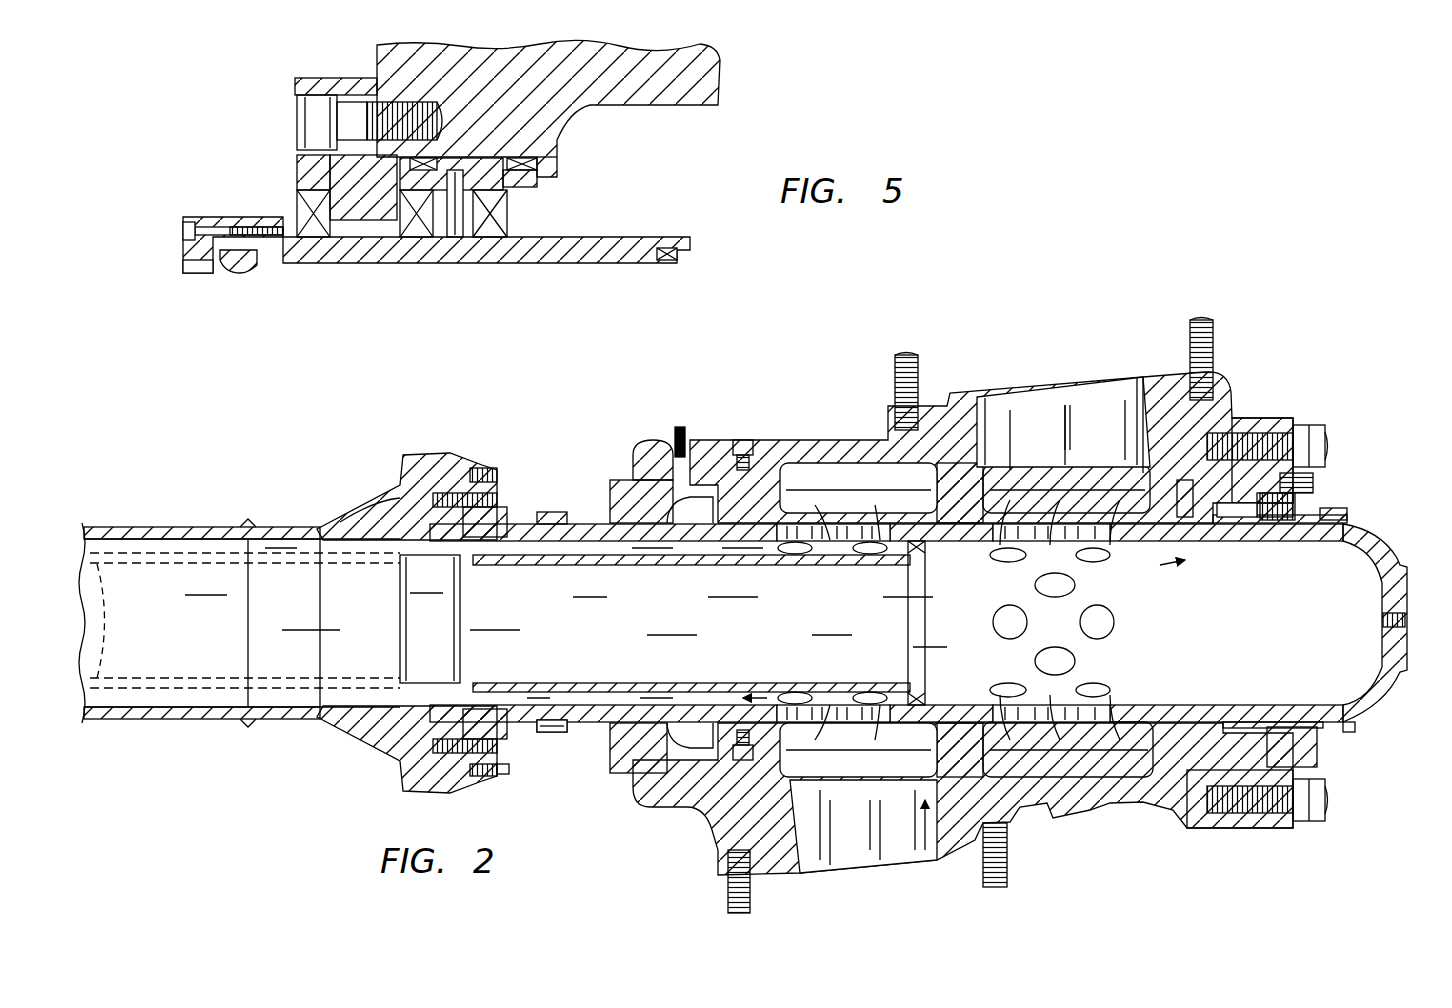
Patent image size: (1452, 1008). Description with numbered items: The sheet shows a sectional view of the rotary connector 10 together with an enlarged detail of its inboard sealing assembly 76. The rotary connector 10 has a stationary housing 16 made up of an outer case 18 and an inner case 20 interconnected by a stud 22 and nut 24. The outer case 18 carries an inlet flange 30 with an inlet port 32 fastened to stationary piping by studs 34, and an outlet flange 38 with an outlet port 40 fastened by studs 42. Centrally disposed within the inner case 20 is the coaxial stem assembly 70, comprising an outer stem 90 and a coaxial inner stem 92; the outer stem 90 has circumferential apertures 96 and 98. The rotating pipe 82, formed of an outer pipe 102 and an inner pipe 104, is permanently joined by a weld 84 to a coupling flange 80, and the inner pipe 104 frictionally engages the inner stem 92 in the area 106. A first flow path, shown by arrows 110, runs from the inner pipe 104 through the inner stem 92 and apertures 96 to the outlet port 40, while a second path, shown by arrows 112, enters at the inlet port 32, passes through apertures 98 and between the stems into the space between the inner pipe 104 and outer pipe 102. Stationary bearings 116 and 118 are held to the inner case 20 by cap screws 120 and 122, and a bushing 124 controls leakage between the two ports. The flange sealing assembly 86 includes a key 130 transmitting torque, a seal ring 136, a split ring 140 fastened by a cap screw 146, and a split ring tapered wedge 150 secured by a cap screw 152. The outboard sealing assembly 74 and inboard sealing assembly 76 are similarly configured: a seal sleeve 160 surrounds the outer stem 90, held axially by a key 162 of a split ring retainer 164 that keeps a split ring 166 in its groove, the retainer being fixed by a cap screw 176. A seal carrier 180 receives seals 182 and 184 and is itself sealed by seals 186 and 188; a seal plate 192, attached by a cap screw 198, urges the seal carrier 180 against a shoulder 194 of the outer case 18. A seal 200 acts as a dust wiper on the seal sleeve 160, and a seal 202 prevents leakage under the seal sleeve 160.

In FIG. 2, the rotary connector 10 is at (805, 393).
In FIG. 2, the housing 16 is at (697, 830).
In FIG. 5, the outer case 18 is at (690, 82).
In FIG. 2, the outer case 18 is at (832, 440).
In FIG. 2, the inner case 20 is at (770, 465).
In FIG. 2, the stud 22 is at (1255, 433).
In FIG. 2, the nut 24 is at (1327, 435).
In FIG. 2, the inlet flange 30 is at (945, 862).
In FIG. 2, the inlet port 32 is at (800, 873).
In FIG. 2, the studs 34 is at (728, 900).
In FIG. 2, the outlet flange 38 is at (1148, 377).
In FIG. 2, the outlet port 40 is at (978, 397).
In FIG. 2, the studs 42 is at (918, 360).
In FIG. 2, the coaxial stem assembly 70 is at (1393, 540).
In FIG. 2, the outboard sealing assembly 74 is at (1353, 505).
In FIG. 5, the inboard sealing assembly 76 is at (598, 187).
In FIG. 2, the inboard sealing assembly 76 is at (605, 480).
In FIG. 2, the coupling flange 80 is at (407, 455).
In FIG. 2, the rotating pipe 82 is at (170, 513).
In FIG. 2, the weld 84 is at (247, 519).
In FIG. 2, the flange sealing assembly 86 is at (522, 468).
In FIG. 2, the outer stem 90 is at (690, 540).
In FIG. 2, the inner stem 92 is at (660, 565).
In FIG. 2, the apertures 96 is at (1090, 525).
In FIG. 2, the apertures 98 is at (810, 683).
In FIG. 2, the outer pipe 102 is at (140, 720).
In FIG. 2, the inner pipe 104 is at (200, 702).
In FIG. 2, the area of frictional engagement 106 is at (430, 680).
In FIG. 2, the arrows 110 is at (335, 630).
In FIG. 2, the arrows 112 is at (265, 547).
In FIG. 2, the stationary bearing 116 is at (1210, 523).
In FIG. 2, the stationary bearing 118 is at (690, 480).
In FIG. 2, the cap screw 120 is at (1183, 523).
In FIG. 2, the cap screw 122 is at (742, 470).
In FIG. 2, the bushing 124 is at (942, 623).
In FIG. 2, the key 130 is at (397, 500).
In FIG. 2, the seal ring 136 is at (398, 500).
In FIG. 2, the split ring 140 is at (500, 478).
In FIG. 2, the cap screw 146 is at (447, 492).
In FIG. 2, the split ring tapered wedge 150 is at (484, 468).
In FIG. 2, the cap screw 152 is at (510, 768).
In FIG. 5, the seal sleeve 160 is at (495, 250).
In FIG. 2, the seal sleeve 160 is at (575, 512).
In FIG. 5, the key 162 is at (200, 275).
In FIG. 5, the split ring retainer 164 is at (185, 250).
In FIG. 2, the split ring retainer 164 is at (562, 733).
In FIG. 5, the split ring 166 is at (238, 272).
In FIG. 2, the split ring 166 is at (1330, 523).
In FIG. 5, the cap screw 176 is at (220, 217).
In FIG. 2, the cap screw 176 is at (1347, 512).
In FIG. 5, the seal carrier 180 is at (522, 187).
In FIG. 5, the seal 182 is at (505, 216).
In FIG. 5, the seal 184 is at (420, 210).
In FIG. 5, the seal 186 is at (445, 158).
In FIG. 5, the seal 188 is at (515, 158).
In FIG. 5, the seal plate 192 is at (340, 78).
In FIG. 2, the seal plate 192 is at (625, 480).
In FIG. 5, the shoulder 194 is at (557, 162).
In FIG. 5, the cap screw 198 is at (300, 118).
In FIG. 2, the cap screw 198 is at (1315, 485).
In FIG. 5, the seal 200 is at (315, 215).
In FIG. 5, the seal 202 is at (675, 258).